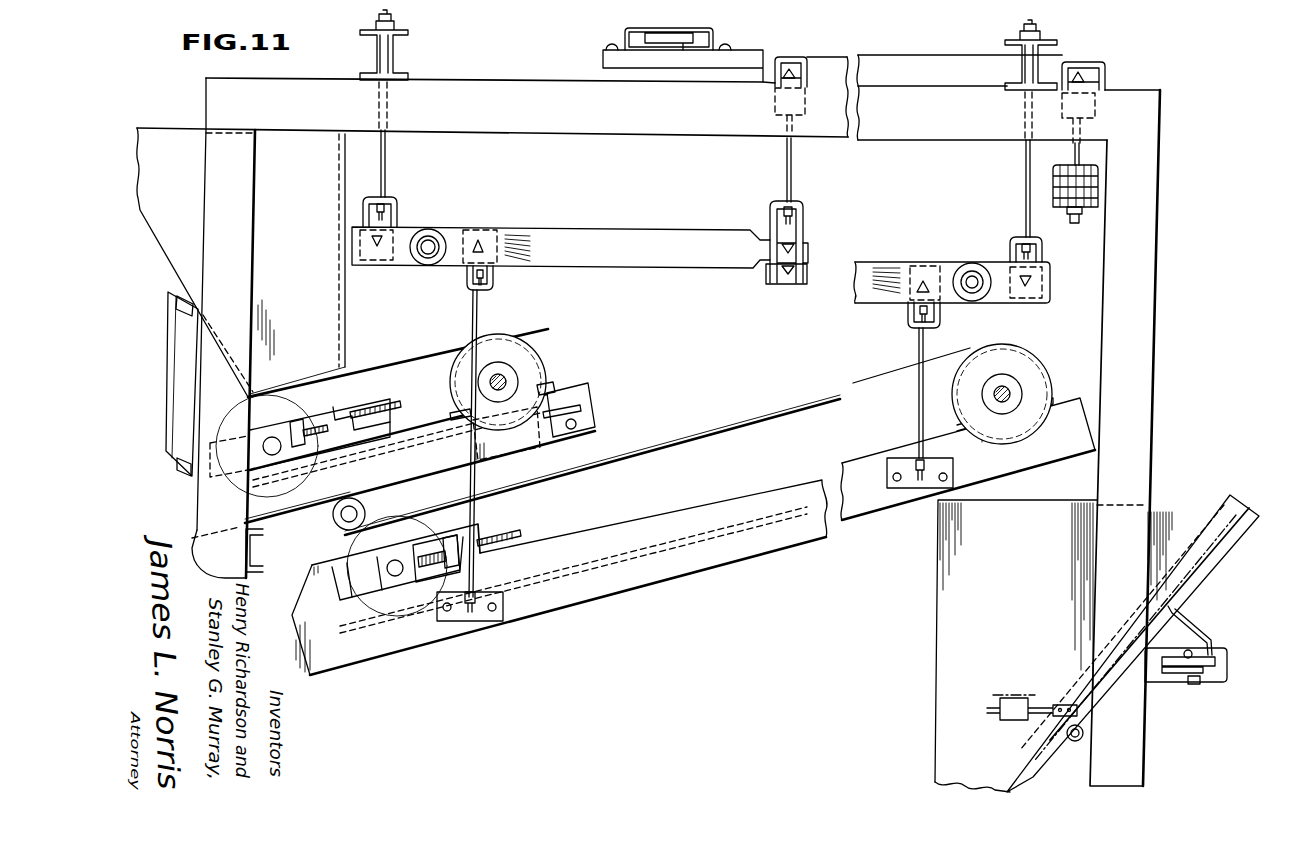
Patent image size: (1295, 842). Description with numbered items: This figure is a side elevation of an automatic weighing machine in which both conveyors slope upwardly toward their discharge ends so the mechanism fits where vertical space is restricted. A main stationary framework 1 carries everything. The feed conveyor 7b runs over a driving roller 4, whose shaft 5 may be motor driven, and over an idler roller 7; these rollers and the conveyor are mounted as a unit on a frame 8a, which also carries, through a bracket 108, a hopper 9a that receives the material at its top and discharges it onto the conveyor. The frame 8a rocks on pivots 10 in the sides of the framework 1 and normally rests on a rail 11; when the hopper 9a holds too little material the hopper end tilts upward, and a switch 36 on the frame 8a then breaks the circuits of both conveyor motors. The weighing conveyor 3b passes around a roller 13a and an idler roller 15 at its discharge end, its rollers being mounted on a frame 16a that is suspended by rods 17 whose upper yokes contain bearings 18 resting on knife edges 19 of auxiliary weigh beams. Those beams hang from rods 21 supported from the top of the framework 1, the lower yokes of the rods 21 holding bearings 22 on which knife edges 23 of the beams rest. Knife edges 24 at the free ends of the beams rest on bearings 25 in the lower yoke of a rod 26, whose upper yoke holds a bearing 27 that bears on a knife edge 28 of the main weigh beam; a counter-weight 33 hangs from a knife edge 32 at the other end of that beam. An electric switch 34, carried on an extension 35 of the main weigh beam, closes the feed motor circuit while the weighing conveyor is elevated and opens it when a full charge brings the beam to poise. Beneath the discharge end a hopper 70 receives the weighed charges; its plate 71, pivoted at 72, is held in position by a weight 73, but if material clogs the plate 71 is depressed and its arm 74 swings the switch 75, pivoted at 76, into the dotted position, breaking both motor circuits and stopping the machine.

The framework 1 is at (654, 420).
The hopper 9a is at (309, 354).
The bracket 108 is at (167, 384).
The rail 11 is at (263, 550).
The feed conveyor 7b is at (402, 426).
The idler roller 7 is at (325, 429).
The weighing conveyor 3b is at (657, 441).
The pivots 10 is at (338, 522).
The driving roller 4 is at (489, 382).
The shaft 5 is at (503, 369).
The frame 8a is at (506, 440).
The switch 36 is at (579, 410).
The frame 16a is at (559, 577).
The idler roller 15 is at (426, 542).
The rods 17 is at (695, 455).
The bearings 18 is at (701, 252).
The knife edges 23 is at (719, 251).
The bearings 22 is at (722, 249).
The knife edges 19 is at (689, 292).
The rods 21 is at (705, 159).
The extension 35 is at (694, 57).
The electric switch 34 is at (685, 38).
The bearing 27 is at (804, 85).
The knife edge 28 is at (810, 68).
The rod 26 is at (802, 170).
The knife edges 24 is at (805, 242).
The bearings 25 is at (769, 280).
The knife edge 32 is at (1099, 100).
The counter-weight 33 is at (1069, 183).
The roller 13a is at (1013, 394).
The hopper 70 is at (1027, 646).
The plate 71 is at (1133, 643).
The arm 74 is at (1191, 644).
The pivot 76 is at (1179, 644).
The switch 75 is at (1195, 698).
The weight 73 is at (1032, 722).
The pivot 72 is at (1070, 749).